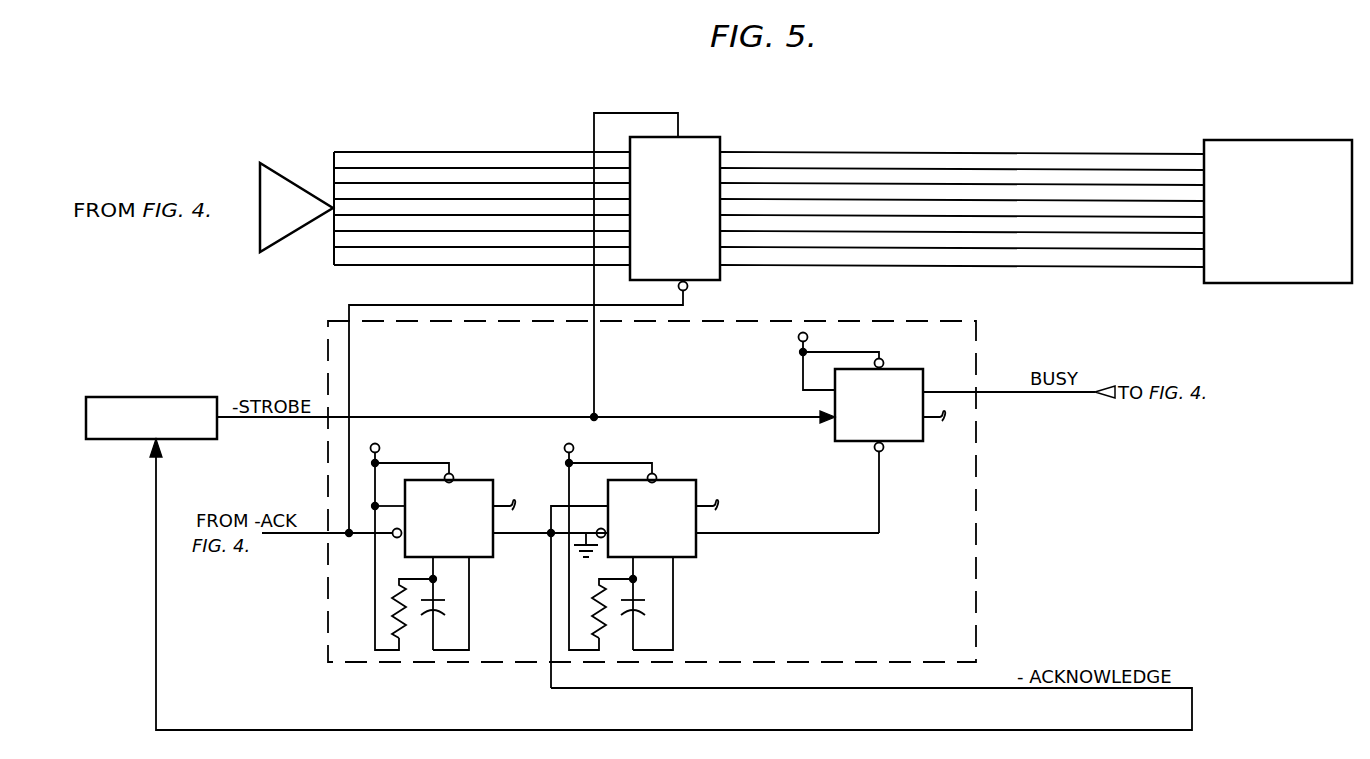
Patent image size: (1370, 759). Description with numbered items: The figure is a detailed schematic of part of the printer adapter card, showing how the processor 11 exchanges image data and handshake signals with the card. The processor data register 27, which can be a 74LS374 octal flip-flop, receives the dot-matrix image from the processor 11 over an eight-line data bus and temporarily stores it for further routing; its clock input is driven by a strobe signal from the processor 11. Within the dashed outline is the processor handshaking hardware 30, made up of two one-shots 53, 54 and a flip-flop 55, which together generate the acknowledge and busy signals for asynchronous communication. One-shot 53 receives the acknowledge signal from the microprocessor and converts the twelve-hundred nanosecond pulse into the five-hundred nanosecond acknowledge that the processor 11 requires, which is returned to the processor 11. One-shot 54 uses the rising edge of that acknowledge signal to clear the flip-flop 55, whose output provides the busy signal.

The processor 11 is at (1322, 150).
The processor data register 27 is at (712, 282).
The processor handshaking hardware 30 is at (966, 349).
The one-shot 53 is at (491, 481).
The one-shot 54 is at (689, 481).
The flip-flop 55 is at (848, 442).